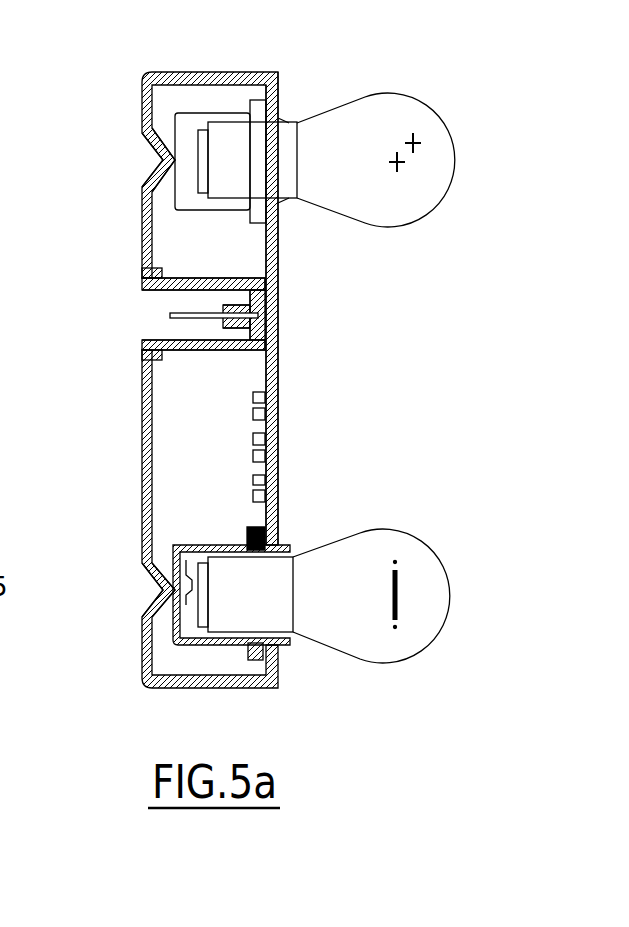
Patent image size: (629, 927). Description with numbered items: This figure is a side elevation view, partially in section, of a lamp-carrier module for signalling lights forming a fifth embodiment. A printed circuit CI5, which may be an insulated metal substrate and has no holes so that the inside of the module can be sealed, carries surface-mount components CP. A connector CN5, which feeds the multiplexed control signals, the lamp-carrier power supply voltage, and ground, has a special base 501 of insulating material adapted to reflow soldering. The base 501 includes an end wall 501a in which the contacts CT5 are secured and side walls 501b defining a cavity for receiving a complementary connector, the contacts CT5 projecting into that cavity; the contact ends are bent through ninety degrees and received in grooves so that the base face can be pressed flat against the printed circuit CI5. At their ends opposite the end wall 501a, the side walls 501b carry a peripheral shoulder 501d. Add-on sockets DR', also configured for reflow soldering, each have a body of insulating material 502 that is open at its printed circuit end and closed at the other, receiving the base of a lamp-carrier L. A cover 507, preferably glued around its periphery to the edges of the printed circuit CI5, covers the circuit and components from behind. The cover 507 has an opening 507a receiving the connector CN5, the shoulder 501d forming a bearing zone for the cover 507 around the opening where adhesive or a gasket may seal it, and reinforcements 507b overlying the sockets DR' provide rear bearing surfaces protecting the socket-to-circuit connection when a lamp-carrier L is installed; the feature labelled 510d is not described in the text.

The cover 507 is at (143, 82).
The body of insulating material 502 is at (187, 162).
The reinforcements 507b is at (141, 168).
The side walls 501b is at (192, 278).
The peripheral shoulder 501d is at (148, 273).
The opening 507a is at (140, 292).
The connector CN5 is at (164, 303).
The contacts CT5 is at (143, 330).
The engaging projection 510d is at (152, 354).
The base 501 is at (223, 359).
The end wall 501a is at (265, 293).
The printed circuit CI5 is at (277, 370).
The components CP is at (253, 488).
The add-on sockets DR' is at (201, 369).
The lamp-carrier L is at (400, 203).